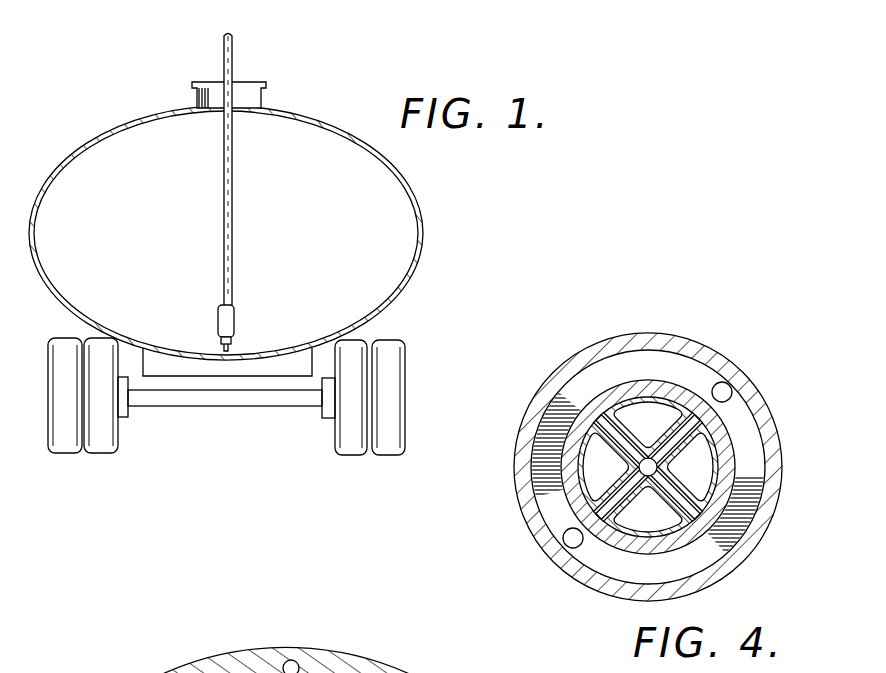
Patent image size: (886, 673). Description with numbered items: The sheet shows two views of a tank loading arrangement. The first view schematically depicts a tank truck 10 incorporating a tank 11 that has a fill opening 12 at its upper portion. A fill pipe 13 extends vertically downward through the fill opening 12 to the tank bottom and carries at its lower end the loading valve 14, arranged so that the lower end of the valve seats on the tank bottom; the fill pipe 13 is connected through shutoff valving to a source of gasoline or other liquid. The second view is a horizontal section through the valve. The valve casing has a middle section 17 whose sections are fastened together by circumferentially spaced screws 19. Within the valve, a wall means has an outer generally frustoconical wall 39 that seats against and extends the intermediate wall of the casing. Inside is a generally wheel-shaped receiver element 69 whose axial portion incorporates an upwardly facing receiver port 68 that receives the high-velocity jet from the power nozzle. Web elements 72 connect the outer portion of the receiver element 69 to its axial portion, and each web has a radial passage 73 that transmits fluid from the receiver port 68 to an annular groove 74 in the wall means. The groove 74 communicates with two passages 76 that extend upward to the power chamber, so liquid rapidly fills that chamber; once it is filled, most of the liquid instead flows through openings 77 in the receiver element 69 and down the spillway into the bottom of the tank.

In FIG. 1, the tank truck 10 is at (67, 118).
In FIG. 1, the tank 11 is at (425, 226).
In FIG. 1, the fill opening 12 is at (246, 90).
In FIG. 1, the fill pipe 13 is at (232, 205).
In FIG. 1, the loading valve 14 is at (240, 320).
In FIG. 1, the middle section 17 is at (202, 645).
In FIG. 1, the screws 19 is at (291, 662).
In FIG. 4, the outer frustoconical wall 39 is at (782, 425).
In FIG. 4, the receiver port 68 is at (636, 467).
In FIG. 4, the receiver element 69 is at (674, 372).
In FIG. 4, the web elements 72 is at (681, 445).
In FIG. 4, the radial passage 73 is at (712, 411).
In FIG. 4, the annular groove 74 is at (748, 493).
In FIG. 4, the passages 76 is at (731, 393).
In FIG. 4, the openings 77 is at (652, 557).